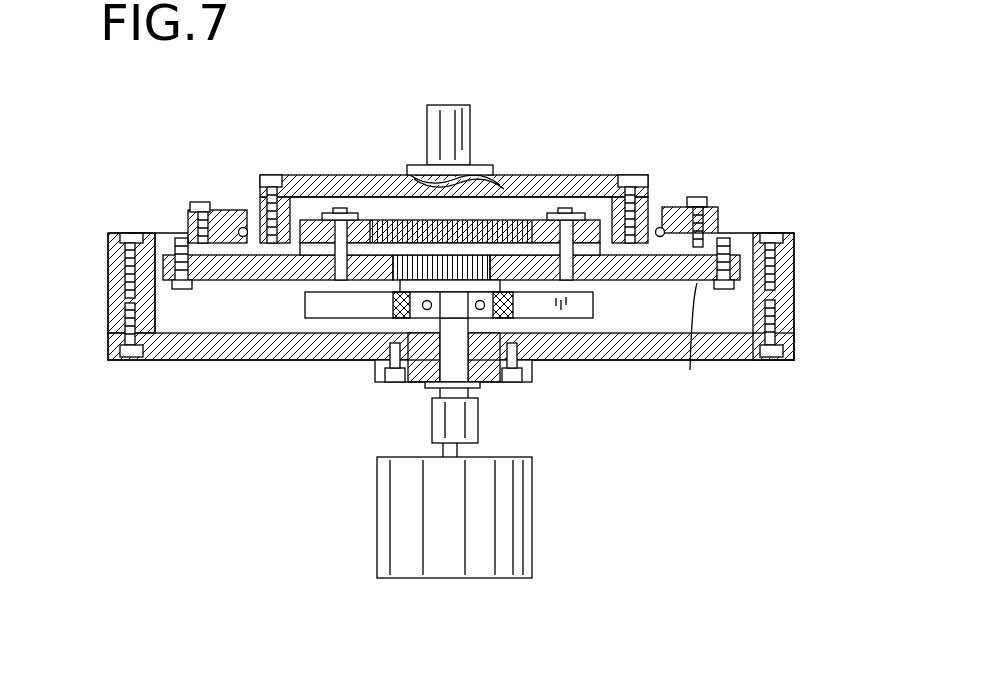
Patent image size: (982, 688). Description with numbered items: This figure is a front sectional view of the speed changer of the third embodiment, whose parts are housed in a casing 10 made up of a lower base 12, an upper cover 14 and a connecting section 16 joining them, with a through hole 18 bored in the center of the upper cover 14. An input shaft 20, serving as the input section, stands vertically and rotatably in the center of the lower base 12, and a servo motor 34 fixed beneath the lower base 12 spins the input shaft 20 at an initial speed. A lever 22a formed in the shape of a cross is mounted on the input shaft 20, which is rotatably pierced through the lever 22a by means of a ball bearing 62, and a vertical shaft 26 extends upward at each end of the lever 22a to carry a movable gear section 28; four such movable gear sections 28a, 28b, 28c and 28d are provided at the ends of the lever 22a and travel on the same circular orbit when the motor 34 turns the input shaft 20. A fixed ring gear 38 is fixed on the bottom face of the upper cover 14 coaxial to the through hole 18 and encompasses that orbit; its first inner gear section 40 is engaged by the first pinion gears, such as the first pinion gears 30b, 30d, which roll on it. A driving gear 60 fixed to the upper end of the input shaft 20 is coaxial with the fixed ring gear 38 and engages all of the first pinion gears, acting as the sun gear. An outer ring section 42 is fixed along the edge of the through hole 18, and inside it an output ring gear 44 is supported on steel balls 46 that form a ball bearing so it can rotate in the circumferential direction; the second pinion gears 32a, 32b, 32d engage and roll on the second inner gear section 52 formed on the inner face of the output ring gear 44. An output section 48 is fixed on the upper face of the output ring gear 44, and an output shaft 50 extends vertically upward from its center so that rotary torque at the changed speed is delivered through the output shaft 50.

The casing 10 is at (800, 287).
The lower base 12 is at (429, 319).
The upper cover 14 is at (735, 233).
The connecting section 16 is at (113, 302).
The through hole 18 is at (110, 362).
The input shaft 20 is at (405, 335).
The lever 22a is at (612, 282).
The vertical shaft 26 is at (338, 208).
The movable gear section 28 is at (478, 121).
The movable gear section 28a is at (418, 214).
The movable gear section 28b is at (310, 214).
The movable gear section 28c is at (448, 5).
The movable gear section 28d is at (598, 214).
The first pinion gear 30b is at (247, 282).
The first pinion gear 30d is at (620, 283).
The second pinion gear 32a is at (480, 283).
The second pinion gear 32b is at (253, 230).
The second pinion gear 32d is at (655, 228).
The servo motor 34 is at (503, 578).
The fixed ring gear 38 is at (693, 292).
The first inner gear section 40 is at (700, 207).
The outer ring section 42 is at (187, 230).
The output ring gear 44 is at (384, 214).
The steel balls 46 is at (223, 215).
The output section 48 is at (610, 166).
The output shaft 50 is at (467, 107).
The second inner gear section 52 is at (560, 283).
The driving gear 60 is at (330, 317).
The ball bearing 62 is at (457, 387).